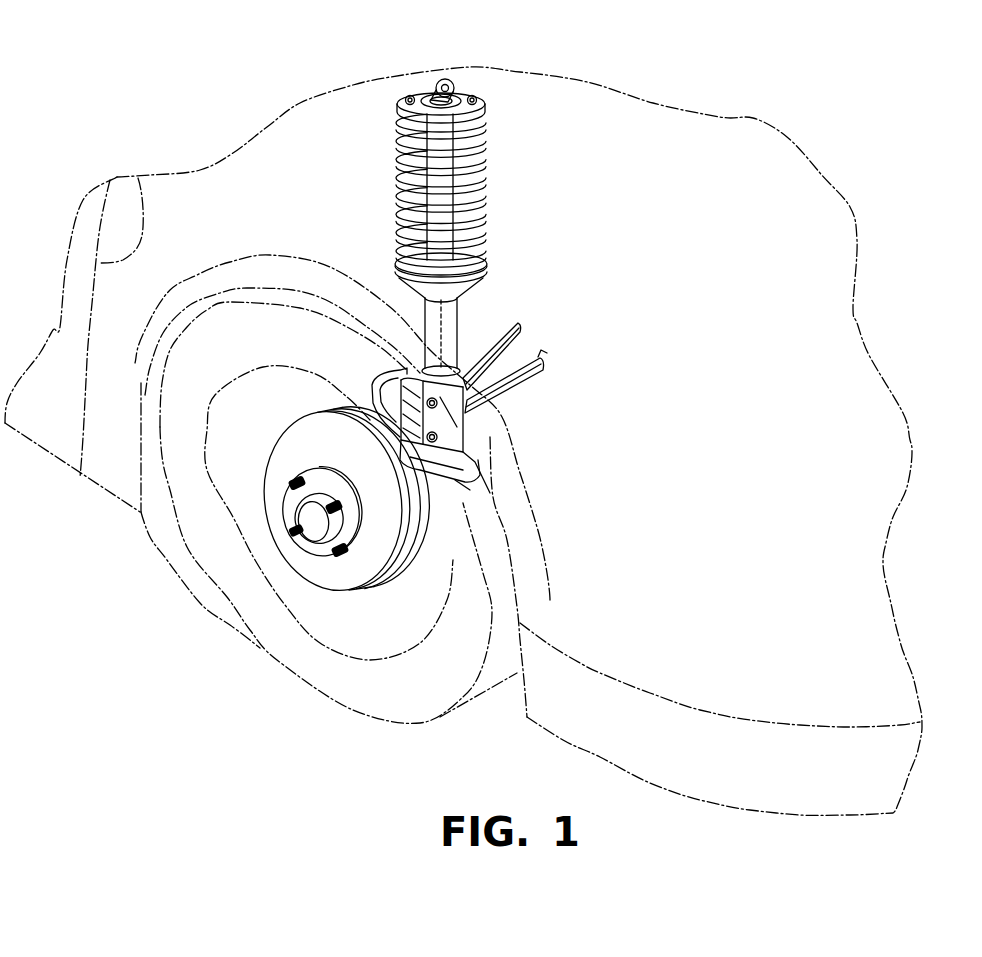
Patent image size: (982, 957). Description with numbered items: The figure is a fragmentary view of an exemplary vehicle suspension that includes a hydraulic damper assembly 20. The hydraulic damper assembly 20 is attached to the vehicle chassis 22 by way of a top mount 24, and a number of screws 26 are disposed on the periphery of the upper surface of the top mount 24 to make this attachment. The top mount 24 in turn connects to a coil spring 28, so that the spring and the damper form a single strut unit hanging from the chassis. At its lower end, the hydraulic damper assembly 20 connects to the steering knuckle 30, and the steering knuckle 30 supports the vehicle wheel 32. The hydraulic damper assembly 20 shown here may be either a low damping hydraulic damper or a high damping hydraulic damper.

The hydraulic damper assembly 20 is at (512, 140).
The vehicle chassis 22 is at (138, 178).
The top mount 24 is at (393, 108).
The screws 26 is at (407, 99).
The coil spring 28 is at (398, 188).
The steering knuckle 30 is at (522, 345).
The vehicle wheel 32 is at (242, 586).